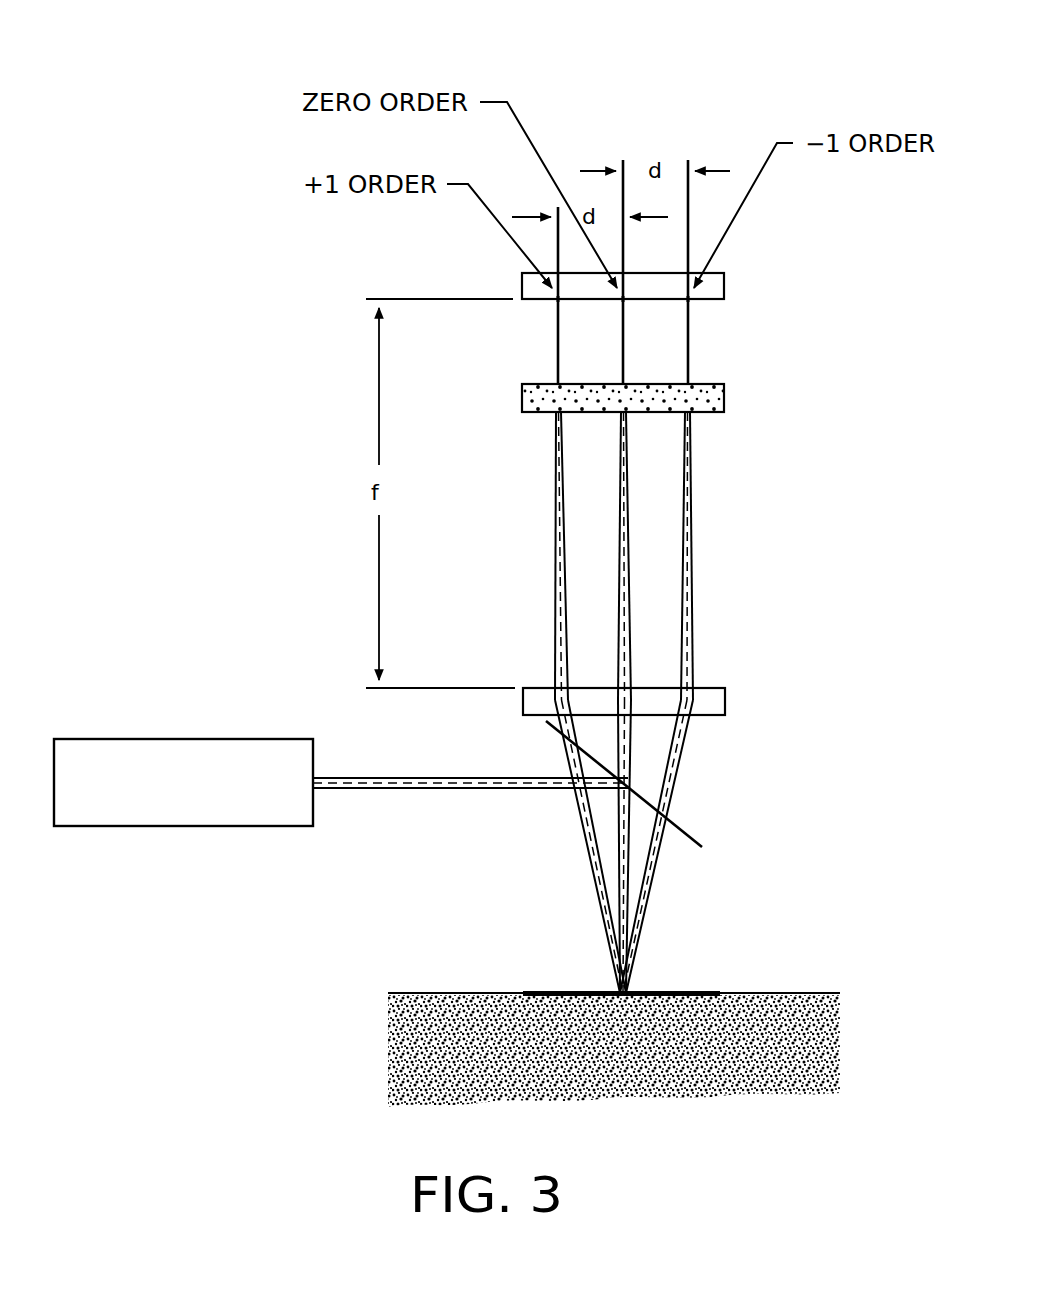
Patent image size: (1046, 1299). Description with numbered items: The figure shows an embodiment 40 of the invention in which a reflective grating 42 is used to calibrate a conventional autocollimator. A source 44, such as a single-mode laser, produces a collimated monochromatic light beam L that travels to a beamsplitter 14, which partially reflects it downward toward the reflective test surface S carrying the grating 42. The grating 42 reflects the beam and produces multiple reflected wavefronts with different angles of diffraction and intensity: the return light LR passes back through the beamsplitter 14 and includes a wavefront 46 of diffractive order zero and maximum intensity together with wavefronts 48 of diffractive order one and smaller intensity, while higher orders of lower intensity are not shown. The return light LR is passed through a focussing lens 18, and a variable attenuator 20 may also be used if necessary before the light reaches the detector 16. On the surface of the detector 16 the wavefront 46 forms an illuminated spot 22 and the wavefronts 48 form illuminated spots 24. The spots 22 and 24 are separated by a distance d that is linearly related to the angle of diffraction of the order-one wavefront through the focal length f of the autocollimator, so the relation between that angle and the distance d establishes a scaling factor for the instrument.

The embodiment of the invention 40 is at (716, 96).
The detector 16 is at (724, 288).
The illuminated spots 24 is at (558, 300).
The illuminated spot 22 is at (623, 300).
The variable attenuator 20 is at (724, 410).
The wavefronts of diffractive order one 48 is at (556, 485).
The wavefront of diffractive order zero 46 is at (620, 578).
The focussing lens 18 is at (694, 686).
The beamsplitter 14 is at (682, 830).
The source 44 is at (114, 767).
The reflective grating 42 is at (715, 990).
The beam of collimated light L is at (440, 790).
The return light LR is at (590, 848).
The reflective test surface S is at (483, 992).